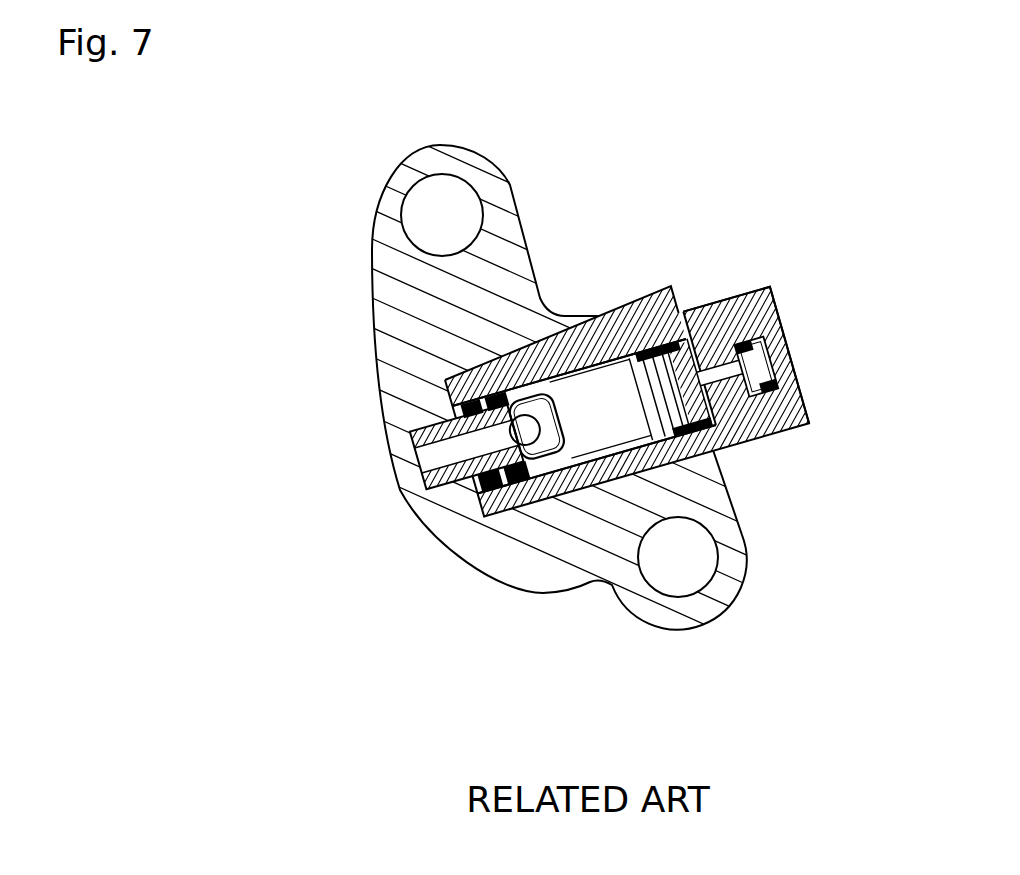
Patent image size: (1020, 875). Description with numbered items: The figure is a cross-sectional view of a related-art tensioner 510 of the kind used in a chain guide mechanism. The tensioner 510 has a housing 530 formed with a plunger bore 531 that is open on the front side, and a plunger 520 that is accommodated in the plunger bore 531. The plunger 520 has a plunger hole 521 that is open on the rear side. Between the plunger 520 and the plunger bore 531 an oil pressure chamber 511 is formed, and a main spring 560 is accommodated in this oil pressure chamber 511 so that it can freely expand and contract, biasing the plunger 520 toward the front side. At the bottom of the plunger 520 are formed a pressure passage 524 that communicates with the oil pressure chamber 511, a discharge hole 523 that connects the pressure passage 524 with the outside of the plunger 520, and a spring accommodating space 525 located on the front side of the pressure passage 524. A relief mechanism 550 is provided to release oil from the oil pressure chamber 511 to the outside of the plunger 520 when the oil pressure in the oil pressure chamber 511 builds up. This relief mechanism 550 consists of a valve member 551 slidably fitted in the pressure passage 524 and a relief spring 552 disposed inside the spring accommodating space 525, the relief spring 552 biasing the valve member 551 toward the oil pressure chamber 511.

The tensioner 510 is at (265, 152).
The oil pressure chamber 511 is at (578, 447).
The plunger 520 is at (732, 298).
The plunger hole 521 is at (605, 443).
The discharge hole 523 is at (698, 308).
The pressure passage 524 is at (663, 303).
The spring accommodating space 525 is at (780, 352).
The housing 530 is at (415, 300).
The plunger bore 531 is at (455, 402).
The relief mechanism 550 is at (772, 375).
The valve member 551 is at (748, 392).
The relief spring 552 is at (758, 293).
The main spring 560 is at (503, 517).